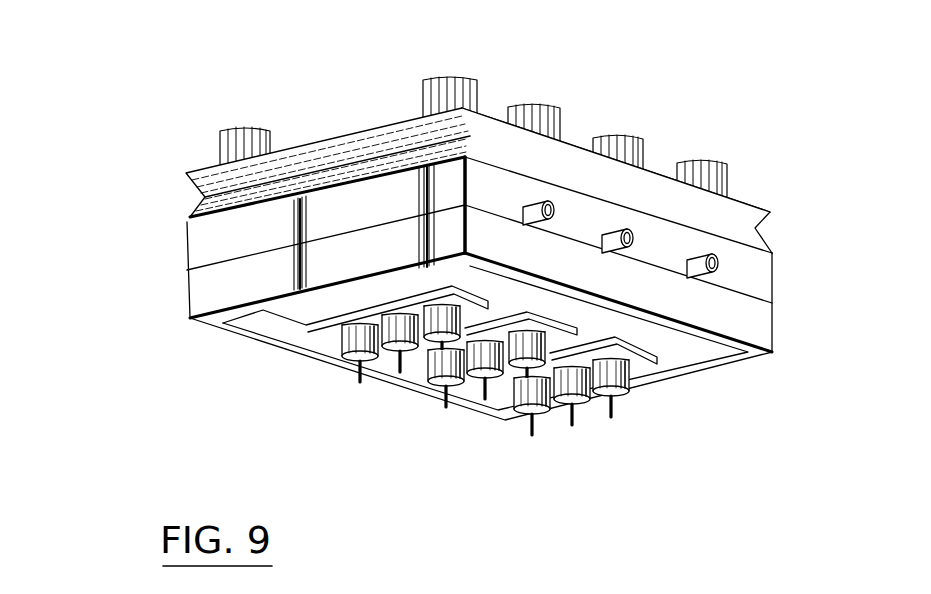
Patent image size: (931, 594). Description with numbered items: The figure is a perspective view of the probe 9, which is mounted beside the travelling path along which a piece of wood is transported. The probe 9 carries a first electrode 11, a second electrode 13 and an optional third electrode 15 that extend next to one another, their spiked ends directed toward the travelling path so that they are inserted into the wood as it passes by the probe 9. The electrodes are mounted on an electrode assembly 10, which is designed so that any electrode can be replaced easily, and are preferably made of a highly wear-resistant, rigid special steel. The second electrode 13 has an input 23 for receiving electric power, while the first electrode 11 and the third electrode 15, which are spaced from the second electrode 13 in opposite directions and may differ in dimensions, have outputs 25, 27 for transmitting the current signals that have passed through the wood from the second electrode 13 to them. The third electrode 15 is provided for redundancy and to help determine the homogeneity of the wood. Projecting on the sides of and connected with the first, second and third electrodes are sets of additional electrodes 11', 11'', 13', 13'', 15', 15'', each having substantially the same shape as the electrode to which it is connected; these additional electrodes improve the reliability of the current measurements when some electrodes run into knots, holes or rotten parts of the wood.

The probe 9 is at (166, 232).
The electrode assembly 10 is at (320, 150).
The first electrode 11 is at (414, 364).
The first additional electrode 11' is at (374, 365).
The first additional electrode 11'' is at (330, 362).
The second electrode 13 is at (503, 406).
The second additional electrode 13' is at (471, 400).
The second additional electrode 13'' is at (434, 404).
The third electrode 15 is at (615, 426).
The third additional electrode 15' is at (573, 430).
The third additional electrode 15'' is at (533, 429).
The input 23 is at (611, 231).
The output 25 is at (533, 203).
The output 27 is at (700, 258).